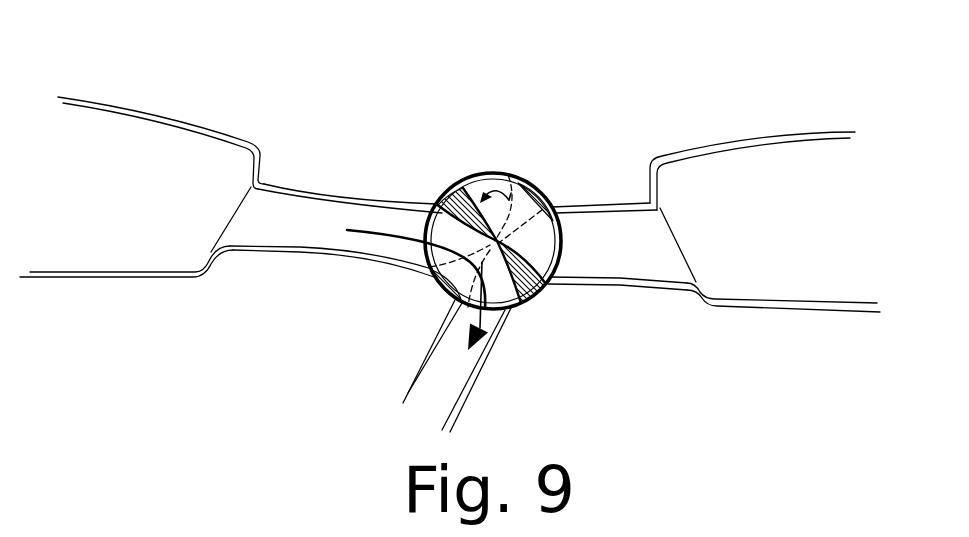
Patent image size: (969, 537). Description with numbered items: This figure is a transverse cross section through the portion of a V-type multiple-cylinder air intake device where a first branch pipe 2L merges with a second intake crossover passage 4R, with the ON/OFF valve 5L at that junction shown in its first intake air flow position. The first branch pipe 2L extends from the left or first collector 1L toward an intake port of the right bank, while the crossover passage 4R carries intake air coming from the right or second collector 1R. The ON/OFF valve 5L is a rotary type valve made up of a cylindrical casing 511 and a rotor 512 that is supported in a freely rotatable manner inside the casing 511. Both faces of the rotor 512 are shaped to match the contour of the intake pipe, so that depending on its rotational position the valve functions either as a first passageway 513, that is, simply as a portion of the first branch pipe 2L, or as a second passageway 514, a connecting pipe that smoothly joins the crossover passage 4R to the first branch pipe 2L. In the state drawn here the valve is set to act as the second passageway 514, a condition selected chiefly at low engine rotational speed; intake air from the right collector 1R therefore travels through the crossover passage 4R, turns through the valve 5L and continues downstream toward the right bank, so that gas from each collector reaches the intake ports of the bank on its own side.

The second collector 1R is at (190, 125).
The first collector 1L is at (755, 135).
The second intake crossover passage 4R is at (335, 195).
The first branch pipe 2L is at (602, 204).
The ON/OFF valve 5L is at (563, 100).
The cylindrical casing 511 is at (475, 174).
The rotor 512 is at (505, 174).
The first passageway 513 is at (543, 248).
The second passageway 514 is at (507, 316).